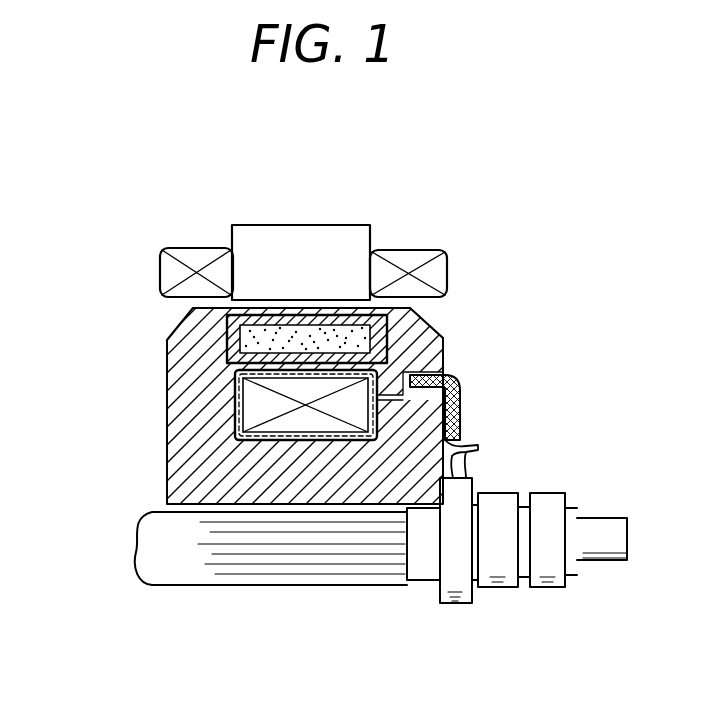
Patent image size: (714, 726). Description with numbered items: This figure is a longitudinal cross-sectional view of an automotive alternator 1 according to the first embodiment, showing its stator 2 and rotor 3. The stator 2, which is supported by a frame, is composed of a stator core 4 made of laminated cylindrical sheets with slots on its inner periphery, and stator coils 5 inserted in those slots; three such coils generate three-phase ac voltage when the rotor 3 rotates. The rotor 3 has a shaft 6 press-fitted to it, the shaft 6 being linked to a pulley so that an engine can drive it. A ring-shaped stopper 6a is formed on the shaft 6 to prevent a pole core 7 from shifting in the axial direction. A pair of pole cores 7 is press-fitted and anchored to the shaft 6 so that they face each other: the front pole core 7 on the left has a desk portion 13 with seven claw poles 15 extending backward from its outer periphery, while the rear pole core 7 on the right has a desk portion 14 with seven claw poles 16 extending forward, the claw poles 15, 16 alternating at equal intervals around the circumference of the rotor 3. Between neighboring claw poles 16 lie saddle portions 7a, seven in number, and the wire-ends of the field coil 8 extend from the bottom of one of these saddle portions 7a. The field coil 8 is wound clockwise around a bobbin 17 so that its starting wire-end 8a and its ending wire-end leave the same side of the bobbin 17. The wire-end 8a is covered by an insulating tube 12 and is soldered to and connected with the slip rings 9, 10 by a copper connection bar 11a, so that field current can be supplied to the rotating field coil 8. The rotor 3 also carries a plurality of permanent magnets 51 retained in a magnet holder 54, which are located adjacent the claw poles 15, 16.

The alternator 1 is at (138, 166).
The stator 2 is at (237, 198).
The rotor 3 is at (127, 387).
The stator core 4 is at (333, 240).
The stator coils 5 is at (408, 257).
The shaft 6 is at (157, 572).
The ring-shaped stopper 6a is at (455, 600).
The pole cores 7 is at (200, 477).
The saddle portions 7a is at (462, 424).
The field coil 8 is at (282, 427).
The wire-end 8a is at (470, 446).
The slip ring 9 is at (497, 580).
The slip ring 10 is at (548, 580).
The connection bar 11a is at (470, 460).
The insulating tube 12 is at (462, 400).
The desk portion 13 is at (180, 407).
The desk portion 14 is at (443, 360).
The claw poles 15 is at (217, 322).
The claw poles 16 is at (407, 310).
The bobbin 17 is at (353, 433).
The permanent magnets 51 is at (390, 325).
The magnet holder 54 is at (382, 357).